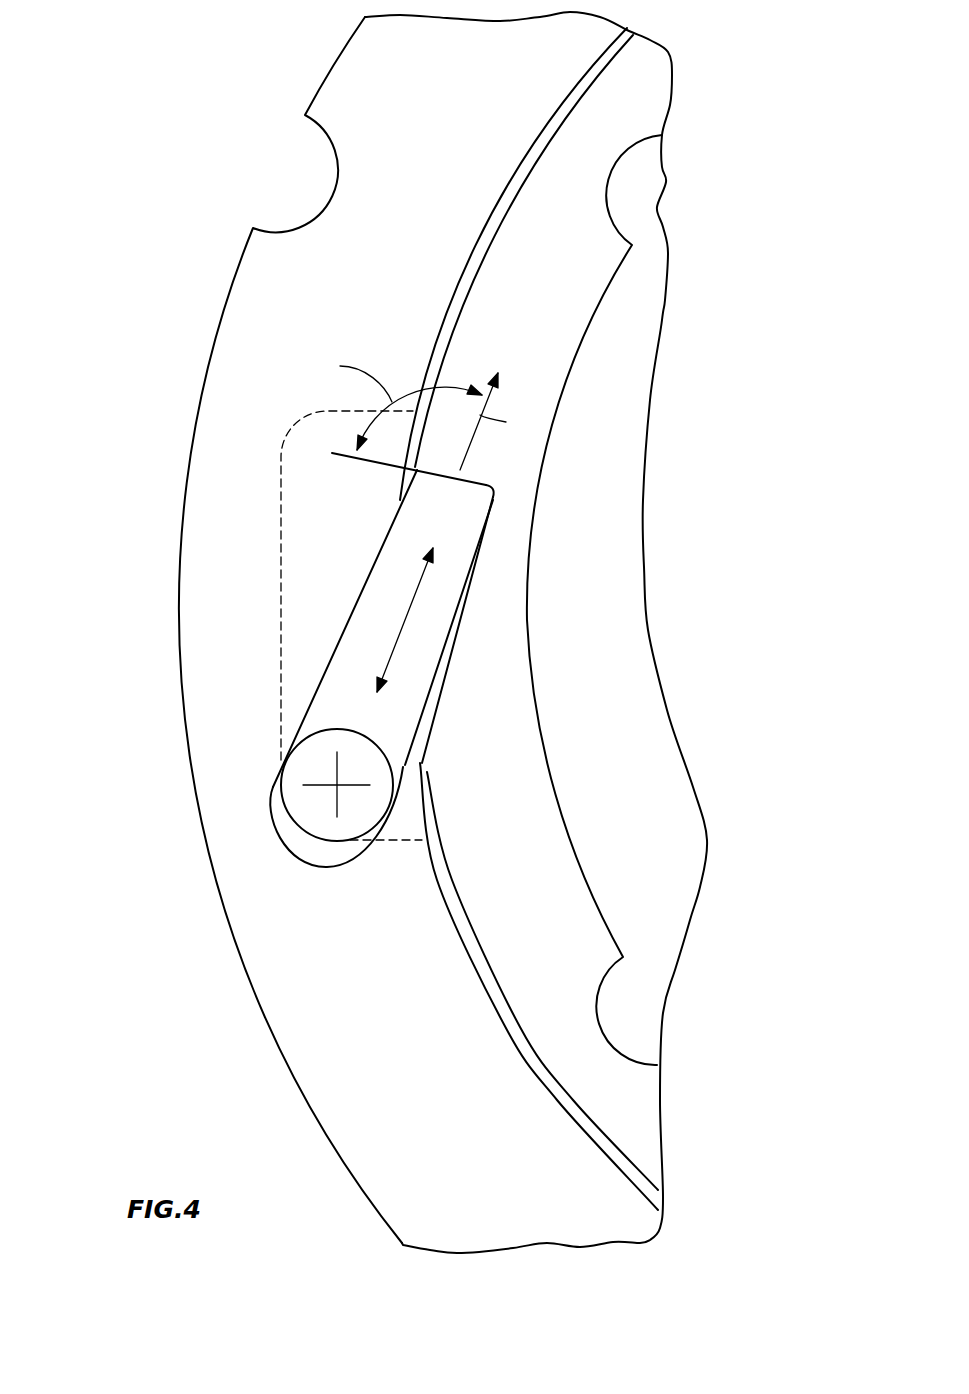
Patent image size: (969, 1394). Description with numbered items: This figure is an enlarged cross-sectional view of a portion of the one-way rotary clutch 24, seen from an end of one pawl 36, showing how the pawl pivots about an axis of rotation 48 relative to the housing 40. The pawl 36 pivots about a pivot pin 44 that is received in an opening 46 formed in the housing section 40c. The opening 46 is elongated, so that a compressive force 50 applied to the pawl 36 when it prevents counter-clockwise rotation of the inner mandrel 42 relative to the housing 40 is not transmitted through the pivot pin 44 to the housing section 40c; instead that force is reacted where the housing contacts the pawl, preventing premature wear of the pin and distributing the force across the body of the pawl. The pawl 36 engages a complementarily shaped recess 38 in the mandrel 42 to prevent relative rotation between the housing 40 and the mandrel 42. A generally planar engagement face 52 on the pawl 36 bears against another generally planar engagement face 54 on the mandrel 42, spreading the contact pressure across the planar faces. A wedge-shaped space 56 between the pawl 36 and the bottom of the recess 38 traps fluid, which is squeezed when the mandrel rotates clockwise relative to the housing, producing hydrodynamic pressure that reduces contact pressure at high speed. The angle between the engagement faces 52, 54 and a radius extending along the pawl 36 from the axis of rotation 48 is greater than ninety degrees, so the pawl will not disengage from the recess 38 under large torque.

The one-way rotary clutch 24 is at (712, 92).
The housing 40 is at (204, 365).
The housing section 40c is at (283, 1062).
The inner mandrel 42 is at (557, 798).
The recess 38 is at (442, 678).
The pawl 36 is at (370, 563).
The engagement face 54 is at (452, 481).
The engagement face 52 is at (484, 484).
The wedge-shaped space 56 is at (458, 625).
The opening 46 is at (292, 853).
The compressive force 50 is at (397, 633).
The pivot pin 44 is at (282, 778).
The axis of rotation 48 is at (337, 785).